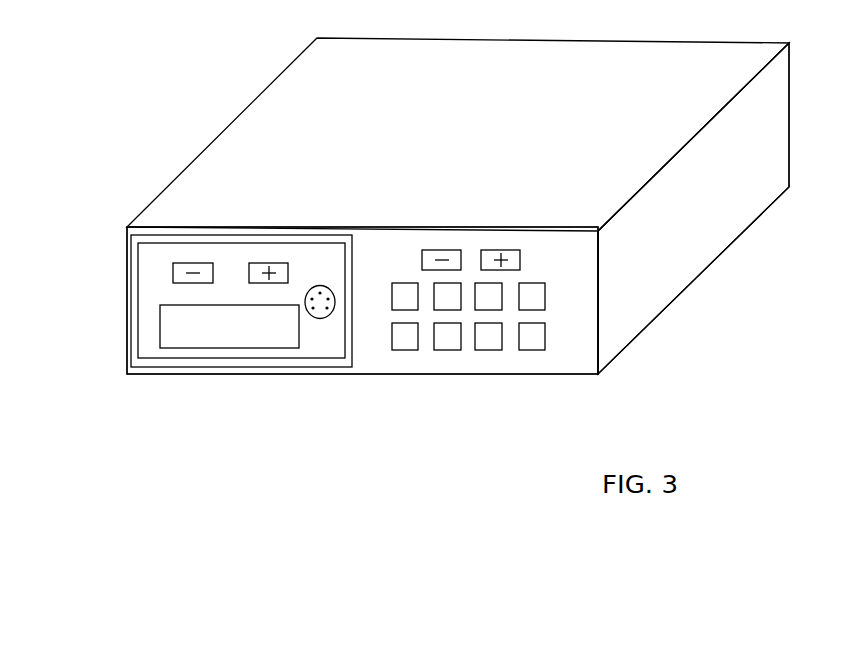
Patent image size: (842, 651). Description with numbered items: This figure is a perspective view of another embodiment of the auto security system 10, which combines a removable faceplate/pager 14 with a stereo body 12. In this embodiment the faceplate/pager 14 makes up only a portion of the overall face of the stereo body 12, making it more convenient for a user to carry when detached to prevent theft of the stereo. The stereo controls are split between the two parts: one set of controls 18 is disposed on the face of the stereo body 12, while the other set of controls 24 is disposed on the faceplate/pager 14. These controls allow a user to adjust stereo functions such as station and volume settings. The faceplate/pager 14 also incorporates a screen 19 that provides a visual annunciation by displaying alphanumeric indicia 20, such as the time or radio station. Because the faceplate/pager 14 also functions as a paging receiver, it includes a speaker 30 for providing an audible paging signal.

The auto security system 10 is at (96, 178).
The stereo body 12 is at (700, 320).
The faceplate/pager 14 is at (242, 395).
The set of controls 18 is at (452, 348).
The screen 19 is at (273, 348).
The alphanumeric indicia 20 is at (172, 325).
The set of controls 24 is at (173, 273).
The speaker 30 is at (322, 285).